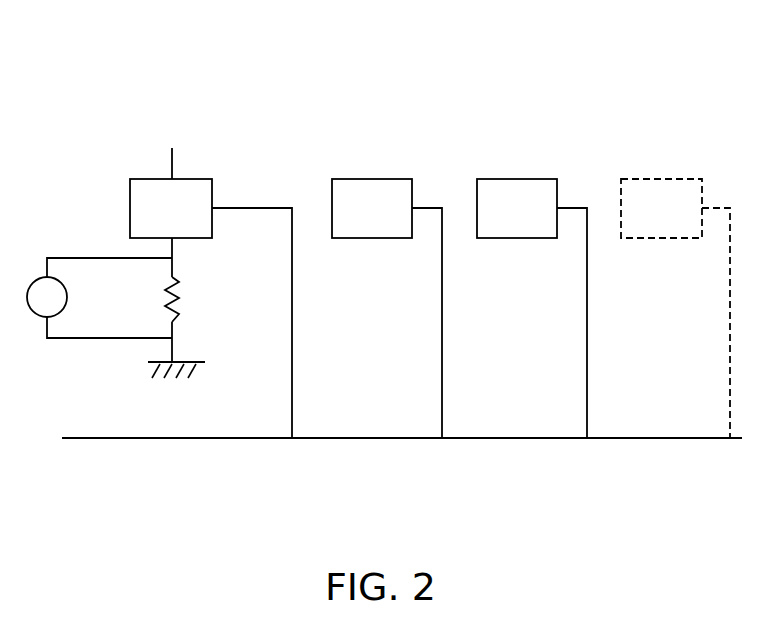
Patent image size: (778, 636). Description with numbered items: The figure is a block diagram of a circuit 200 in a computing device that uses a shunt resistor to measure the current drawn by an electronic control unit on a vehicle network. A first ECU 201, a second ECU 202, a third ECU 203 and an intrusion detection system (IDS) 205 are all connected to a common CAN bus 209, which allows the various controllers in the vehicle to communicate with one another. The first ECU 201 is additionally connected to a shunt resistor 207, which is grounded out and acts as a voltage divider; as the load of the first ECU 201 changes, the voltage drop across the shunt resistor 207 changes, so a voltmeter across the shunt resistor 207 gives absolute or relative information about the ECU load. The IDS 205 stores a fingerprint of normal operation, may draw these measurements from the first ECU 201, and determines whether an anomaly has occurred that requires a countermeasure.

The circuit 200 is at (138, 68).
The first ECU 201 is at (130, 211).
The second ECU 202 is at (370, 179).
The third ECU 203 is at (516, 179).
The intrusion detection system (IDS) 205 is at (659, 179).
The shunt resistor 207 is at (167, 300).
The CAN bus 209 is at (512, 440).